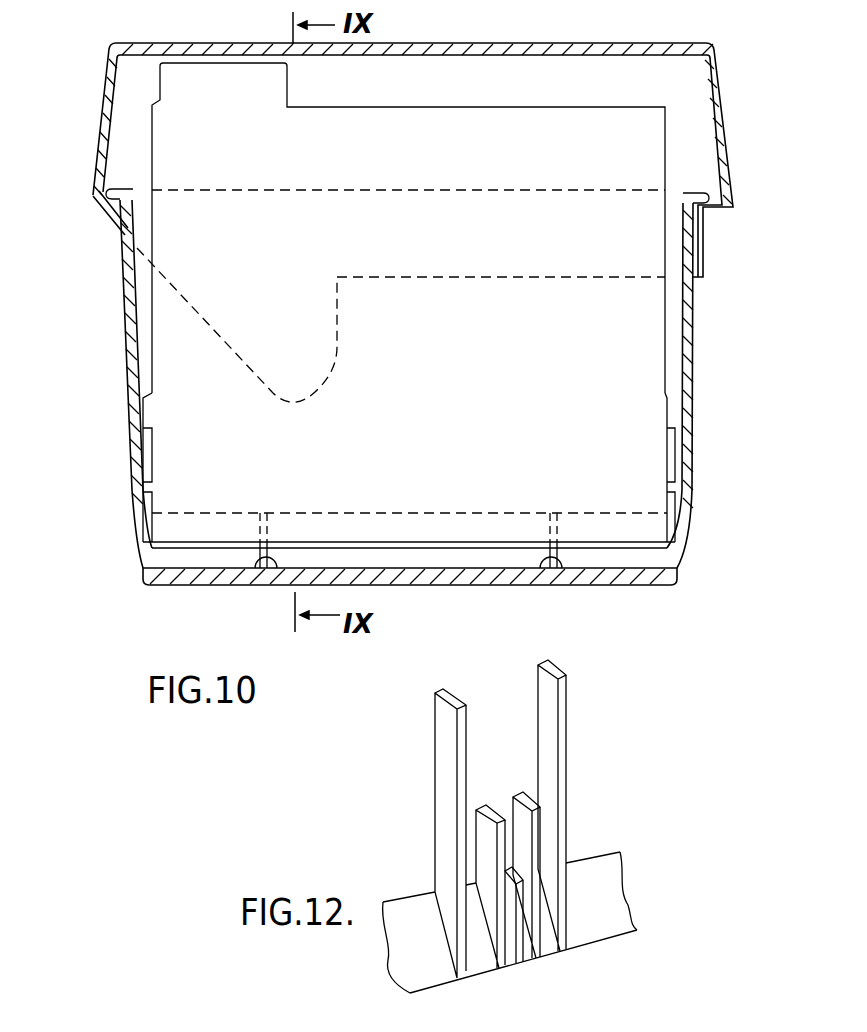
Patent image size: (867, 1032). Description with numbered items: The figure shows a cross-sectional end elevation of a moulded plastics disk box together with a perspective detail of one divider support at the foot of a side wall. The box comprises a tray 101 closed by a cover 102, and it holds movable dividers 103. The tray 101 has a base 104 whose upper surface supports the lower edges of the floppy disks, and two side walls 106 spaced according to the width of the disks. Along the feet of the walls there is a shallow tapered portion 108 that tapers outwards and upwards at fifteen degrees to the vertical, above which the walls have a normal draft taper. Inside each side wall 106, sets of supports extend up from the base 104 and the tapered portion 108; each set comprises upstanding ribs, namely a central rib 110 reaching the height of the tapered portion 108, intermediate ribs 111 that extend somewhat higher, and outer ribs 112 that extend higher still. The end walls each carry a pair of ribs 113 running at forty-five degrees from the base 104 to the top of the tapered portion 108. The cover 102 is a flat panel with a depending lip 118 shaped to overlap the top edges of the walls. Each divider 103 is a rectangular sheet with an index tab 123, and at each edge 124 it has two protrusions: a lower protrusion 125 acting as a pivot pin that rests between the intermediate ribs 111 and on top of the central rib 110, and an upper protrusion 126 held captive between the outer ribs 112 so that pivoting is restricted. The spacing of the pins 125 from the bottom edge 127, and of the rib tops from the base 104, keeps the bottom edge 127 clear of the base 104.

In FIG. 10, the tray 101 is at (119, 446).
In FIG. 10, the cover 102 is at (513, 44).
In FIG. 10, the movable divider 103 is at (152, 278).
In FIG. 10, the base 104 is at (398, 585).
In FIG. 12, the base 104 is at (552, 995).
In FIG. 10, the side wall 106 is at (128, 378).
In FIG. 12, the side wall 106 is at (428, 880).
In FIG. 10, the tapered portion 108 is at (682, 542).
In FIG. 12, the tapered portion 108 is at (610, 912).
In FIG. 10, the central rib 110 is at (138, 523).
In FIG. 12, the central rib 110 is at (522, 943).
In FIG. 12, the intermediate rib 111 is at (513, 813).
In FIG. 12, the outer rib 112 is at (543, 730).
In FIG. 10, the rib 113 is at (273, 585).
In FIG. 10, the depending lip 118 is at (732, 86).
In FIG. 10, the index tab 123 is at (291, 70).
In FIG. 10, the edge 124 is at (150, 328).
In FIG. 10, the lower protrusion 125 is at (138, 492).
In FIG. 10, the upper protrusion 126 is at (143, 412).
In FIG. 10, the bottom edge 127 is at (598, 533).